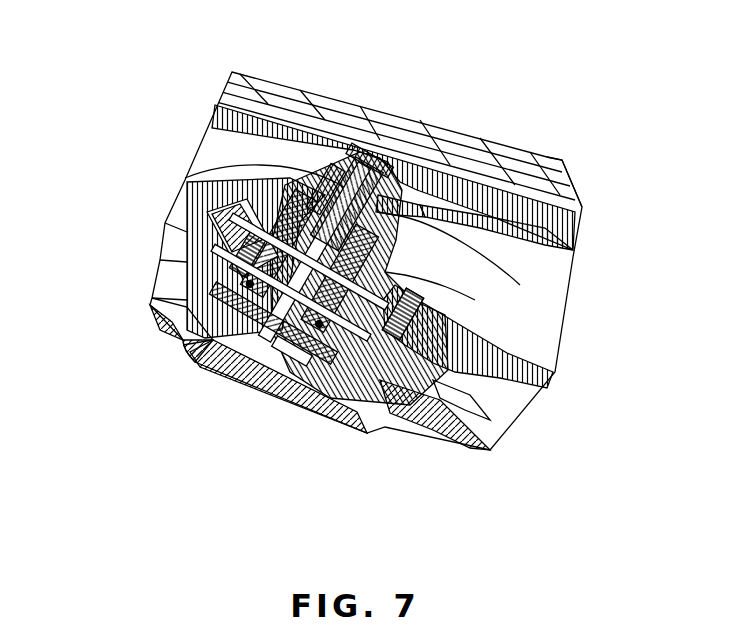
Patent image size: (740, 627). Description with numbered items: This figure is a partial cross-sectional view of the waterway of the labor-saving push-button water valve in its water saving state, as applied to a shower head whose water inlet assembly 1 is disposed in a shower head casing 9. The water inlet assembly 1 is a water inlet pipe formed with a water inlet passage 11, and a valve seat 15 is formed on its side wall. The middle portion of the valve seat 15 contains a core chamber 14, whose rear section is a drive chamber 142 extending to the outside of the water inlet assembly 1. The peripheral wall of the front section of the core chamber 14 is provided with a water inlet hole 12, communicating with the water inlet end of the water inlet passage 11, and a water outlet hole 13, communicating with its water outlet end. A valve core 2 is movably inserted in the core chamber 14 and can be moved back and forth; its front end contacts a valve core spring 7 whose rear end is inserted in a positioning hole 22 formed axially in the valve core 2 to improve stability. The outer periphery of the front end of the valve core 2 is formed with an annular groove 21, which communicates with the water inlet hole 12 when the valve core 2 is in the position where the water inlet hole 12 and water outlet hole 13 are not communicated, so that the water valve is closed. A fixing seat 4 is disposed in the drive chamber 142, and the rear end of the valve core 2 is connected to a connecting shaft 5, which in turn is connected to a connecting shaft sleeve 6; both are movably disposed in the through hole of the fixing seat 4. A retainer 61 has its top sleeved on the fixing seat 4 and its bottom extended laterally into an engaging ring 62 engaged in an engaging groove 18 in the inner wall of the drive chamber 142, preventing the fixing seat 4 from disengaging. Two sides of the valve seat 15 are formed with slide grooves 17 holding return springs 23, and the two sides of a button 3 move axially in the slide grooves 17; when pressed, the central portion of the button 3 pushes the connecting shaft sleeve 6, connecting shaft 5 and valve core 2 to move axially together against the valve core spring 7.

The water inlet assembly 1 is at (278, 118).
The valve core 2 is at (330, 162).
The water outlet hole 13 is at (358, 128).
The valve core spring 7 is at (378, 140).
The core chamber 14 is at (395, 170).
The water inlet hole 12 is at (480, 215).
The water inlet passage 11 is at (552, 210).
The shower head casing 9 is at (572, 182).
The positioning hole 22 is at (185, 178).
The engaging ring 62 is at (225, 250).
The slide grooves 17 is at (225, 268).
The engaging groove 18 is at (200, 288).
The fixing seat 4 is at (197, 360).
The connecting shaft 5 is at (243, 355).
The button 3 is at (293, 393).
The connecting shaft sleeve 6 is at (328, 400).
The retainer 61 is at (375, 445).
The return springs 23 is at (440, 430).
The valve seat 15 is at (548, 380).
The drive chamber 142 is at (475, 300).
The annular groove 21 is at (520, 285).